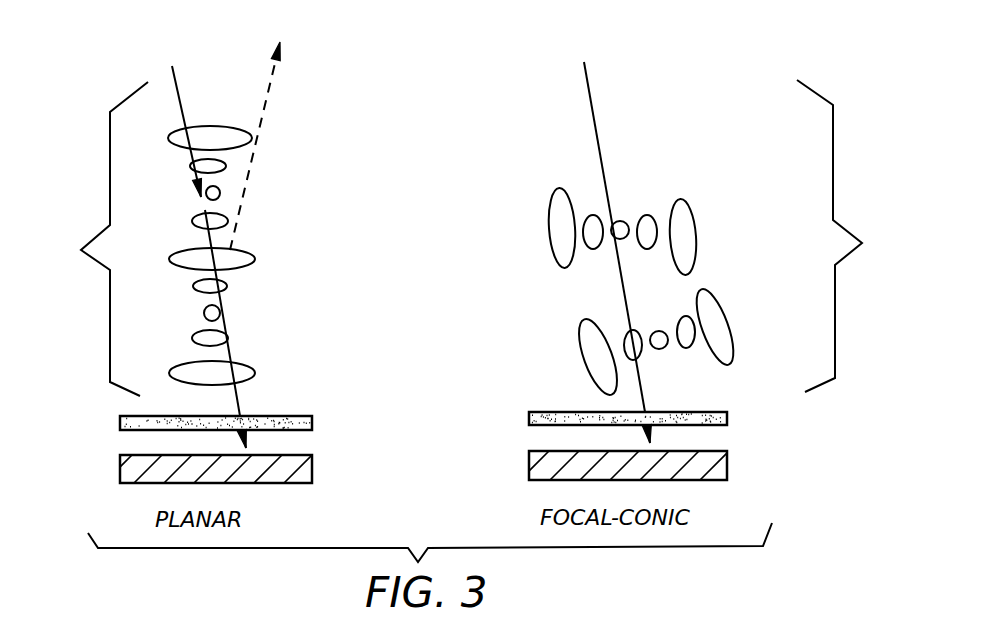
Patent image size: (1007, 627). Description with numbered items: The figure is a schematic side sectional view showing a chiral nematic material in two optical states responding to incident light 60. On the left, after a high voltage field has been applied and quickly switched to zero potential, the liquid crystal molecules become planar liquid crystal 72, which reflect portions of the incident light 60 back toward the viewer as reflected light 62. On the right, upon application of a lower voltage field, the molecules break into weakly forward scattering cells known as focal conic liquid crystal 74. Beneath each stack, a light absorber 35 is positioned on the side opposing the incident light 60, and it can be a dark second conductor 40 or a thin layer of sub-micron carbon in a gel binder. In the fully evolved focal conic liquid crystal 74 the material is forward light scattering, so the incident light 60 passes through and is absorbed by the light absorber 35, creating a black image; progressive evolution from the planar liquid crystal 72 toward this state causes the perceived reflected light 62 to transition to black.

The light absorber 35 is at (118, 422).
The dark second conductor 40 is at (120, 468).
The incident light 60 is at (178, 75).
The reflected light 62 is at (273, 78).
The planar liquid crystal 72 is at (149, 239).
The focal conic liquid crystal 74 is at (720, 239).